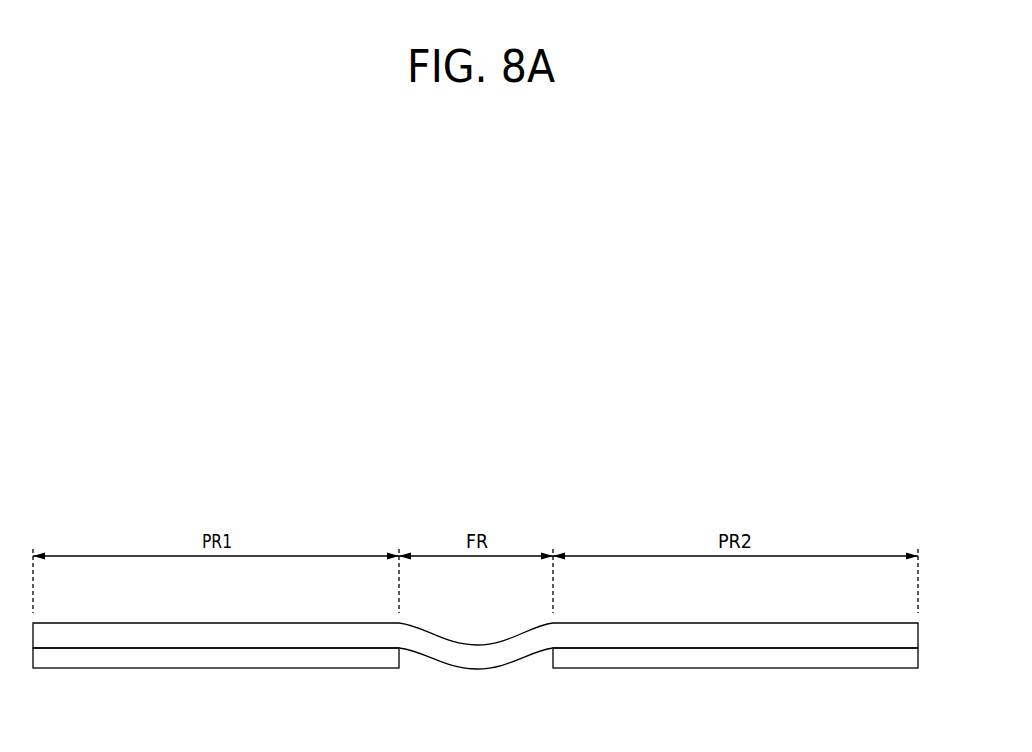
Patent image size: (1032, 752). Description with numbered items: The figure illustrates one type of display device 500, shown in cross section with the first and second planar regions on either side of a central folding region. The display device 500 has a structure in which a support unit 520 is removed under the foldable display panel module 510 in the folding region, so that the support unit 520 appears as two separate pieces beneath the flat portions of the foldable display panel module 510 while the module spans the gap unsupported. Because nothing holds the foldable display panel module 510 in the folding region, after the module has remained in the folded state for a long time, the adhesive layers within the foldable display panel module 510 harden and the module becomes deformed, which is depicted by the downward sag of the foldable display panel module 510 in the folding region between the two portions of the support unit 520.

The display device 500 is at (540, 444).
The foldable display panel module 510 is at (911, 636).
The support unit 520 is at (911, 660).